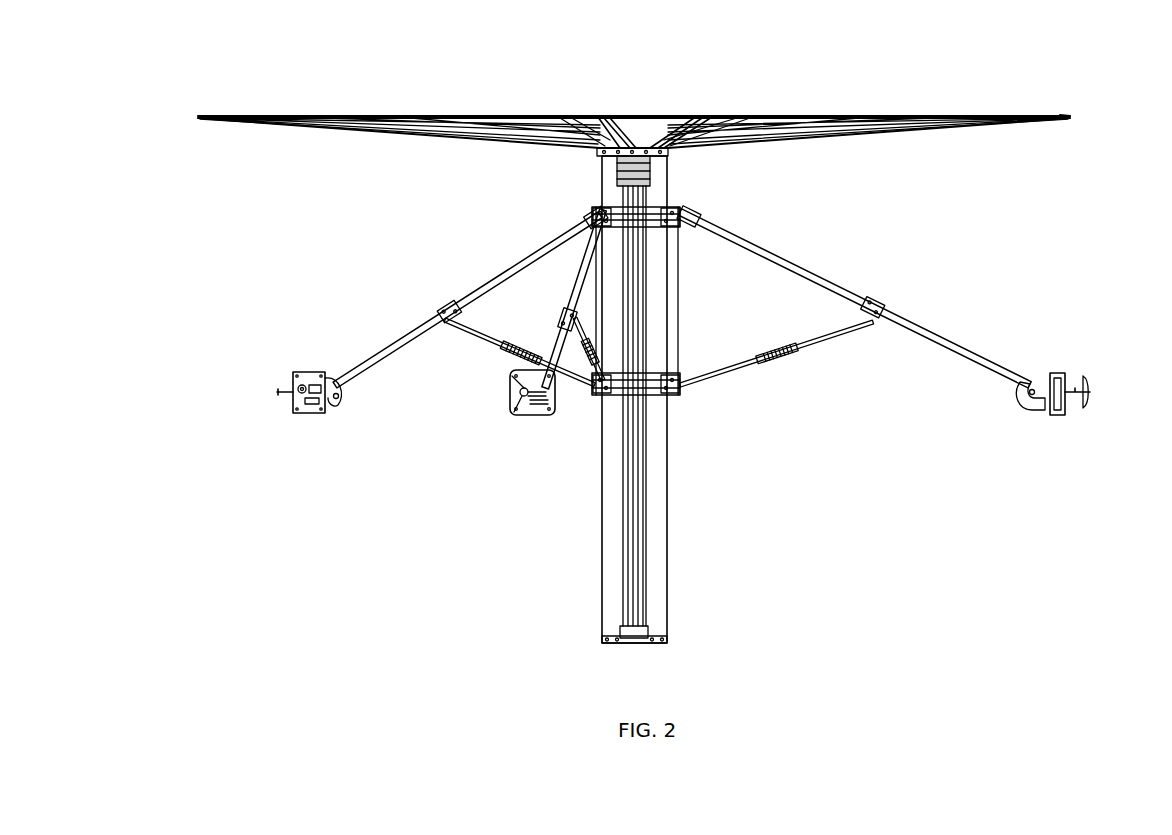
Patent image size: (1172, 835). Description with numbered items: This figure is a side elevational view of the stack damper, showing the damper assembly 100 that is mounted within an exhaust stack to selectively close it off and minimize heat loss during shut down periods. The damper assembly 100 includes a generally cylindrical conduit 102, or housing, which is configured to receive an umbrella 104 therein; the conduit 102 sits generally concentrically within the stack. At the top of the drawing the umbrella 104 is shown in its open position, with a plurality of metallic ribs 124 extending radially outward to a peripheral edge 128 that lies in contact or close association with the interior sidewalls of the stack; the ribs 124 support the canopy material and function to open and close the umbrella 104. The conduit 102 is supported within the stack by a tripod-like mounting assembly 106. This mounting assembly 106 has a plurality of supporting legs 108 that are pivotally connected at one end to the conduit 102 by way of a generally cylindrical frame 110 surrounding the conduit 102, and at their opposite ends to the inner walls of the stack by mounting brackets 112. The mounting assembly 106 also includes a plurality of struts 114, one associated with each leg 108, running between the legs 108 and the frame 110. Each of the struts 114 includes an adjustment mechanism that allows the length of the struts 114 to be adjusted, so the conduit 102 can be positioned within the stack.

The damper assembly 100 is at (672, 52).
The conduit 102 is at (668, 565).
The umbrella 104 is at (762, 120).
The mounting assembly 106 is at (787, 372).
The supporting legs 108 is at (494, 275).
The cylindrical frame 110 is at (700, 196).
The mounting brackets 112 is at (310, 370).
The struts 114 is at (478, 343).
The metallic ribs 124 is at (608, 115).
The peripheral edge 128 is at (1073, 118).